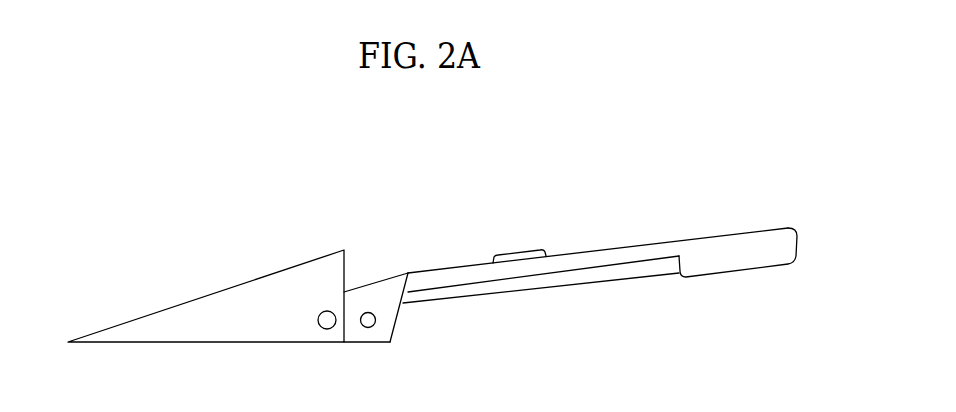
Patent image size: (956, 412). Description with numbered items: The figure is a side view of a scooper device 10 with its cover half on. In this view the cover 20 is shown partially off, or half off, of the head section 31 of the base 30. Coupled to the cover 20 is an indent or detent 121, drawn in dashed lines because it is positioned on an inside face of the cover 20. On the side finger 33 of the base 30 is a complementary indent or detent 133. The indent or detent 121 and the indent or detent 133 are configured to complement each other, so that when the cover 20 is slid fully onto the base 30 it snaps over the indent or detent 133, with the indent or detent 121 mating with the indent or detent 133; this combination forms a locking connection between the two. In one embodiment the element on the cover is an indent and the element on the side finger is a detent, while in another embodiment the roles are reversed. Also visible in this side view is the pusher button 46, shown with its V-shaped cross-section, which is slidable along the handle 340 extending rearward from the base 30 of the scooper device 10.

The scooper device 10 is at (512, 120).
The cover 20 is at (296, 277).
The base 30 is at (398, 240).
The head section 31 is at (370, 290).
The side finger 33 is at (393, 300).
The pusher button 46 is at (530, 253).
The indent or detent 121 is at (326, 330).
The indent or detent 133 is at (373, 327).
The handle 340 is at (738, 248).